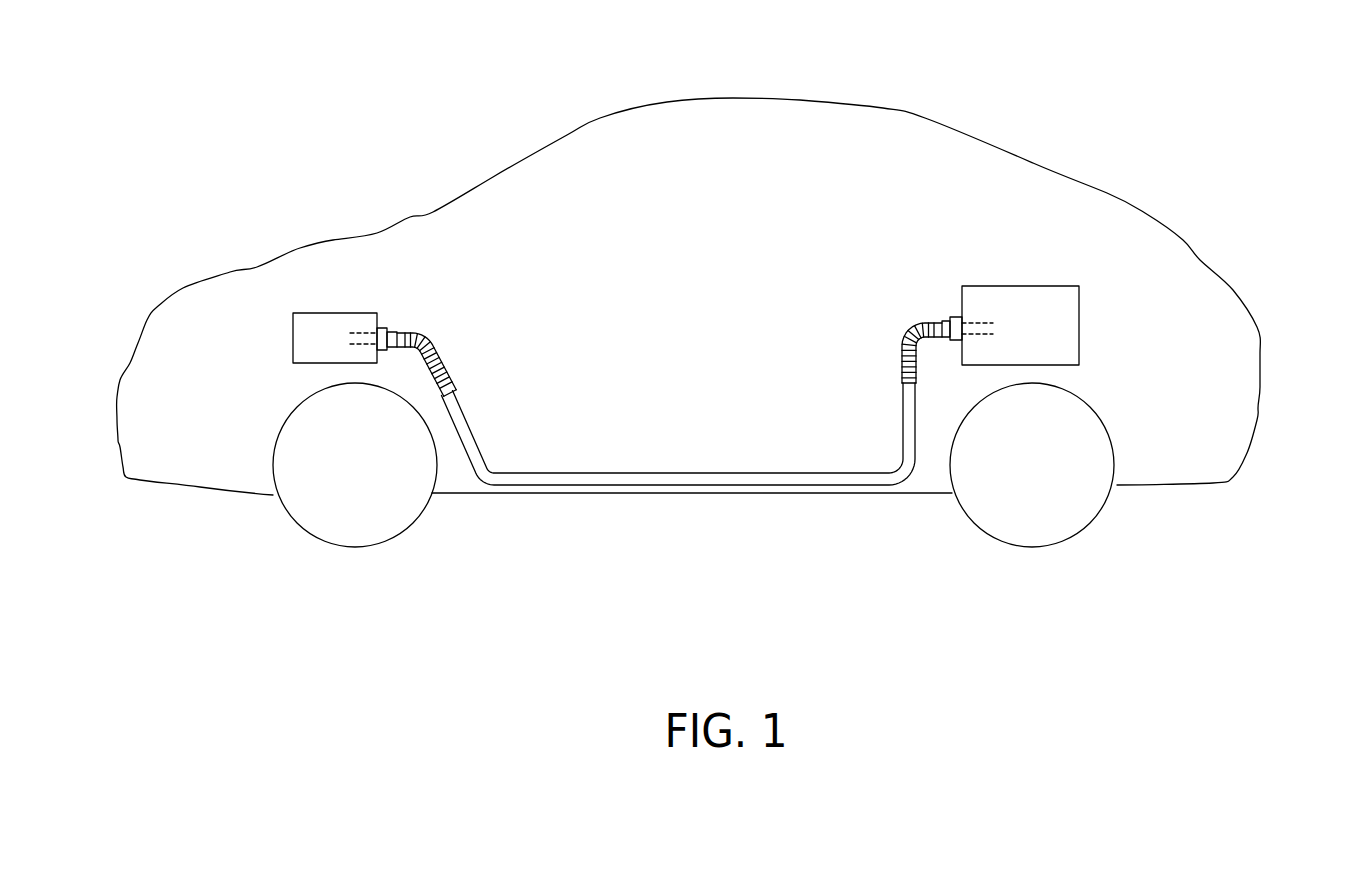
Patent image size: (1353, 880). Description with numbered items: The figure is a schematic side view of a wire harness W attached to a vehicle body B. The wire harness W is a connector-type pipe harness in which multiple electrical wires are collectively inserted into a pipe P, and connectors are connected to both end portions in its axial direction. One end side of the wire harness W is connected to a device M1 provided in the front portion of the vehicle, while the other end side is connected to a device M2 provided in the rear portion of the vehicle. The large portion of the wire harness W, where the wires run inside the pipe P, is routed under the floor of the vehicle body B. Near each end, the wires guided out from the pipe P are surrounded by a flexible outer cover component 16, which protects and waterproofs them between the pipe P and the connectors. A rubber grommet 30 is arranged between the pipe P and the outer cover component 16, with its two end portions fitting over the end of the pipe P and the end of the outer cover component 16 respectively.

The vehicle body B is at (1203, 315).
The wire harness W is at (583, 448).
The pipe P is at (673, 480).
The device M1 is at (330, 323).
The device M2 is at (1040, 303).
The outer cover component 16 is at (414, 330).
The grommet 30 is at (438, 382).